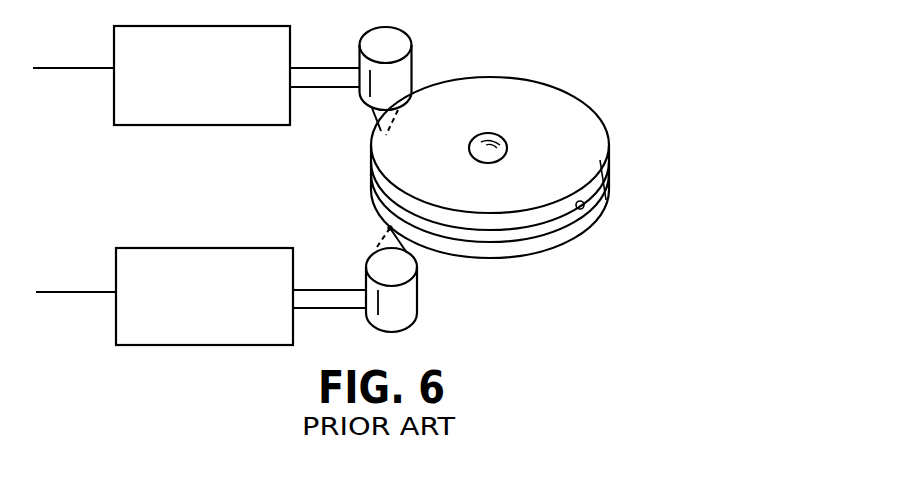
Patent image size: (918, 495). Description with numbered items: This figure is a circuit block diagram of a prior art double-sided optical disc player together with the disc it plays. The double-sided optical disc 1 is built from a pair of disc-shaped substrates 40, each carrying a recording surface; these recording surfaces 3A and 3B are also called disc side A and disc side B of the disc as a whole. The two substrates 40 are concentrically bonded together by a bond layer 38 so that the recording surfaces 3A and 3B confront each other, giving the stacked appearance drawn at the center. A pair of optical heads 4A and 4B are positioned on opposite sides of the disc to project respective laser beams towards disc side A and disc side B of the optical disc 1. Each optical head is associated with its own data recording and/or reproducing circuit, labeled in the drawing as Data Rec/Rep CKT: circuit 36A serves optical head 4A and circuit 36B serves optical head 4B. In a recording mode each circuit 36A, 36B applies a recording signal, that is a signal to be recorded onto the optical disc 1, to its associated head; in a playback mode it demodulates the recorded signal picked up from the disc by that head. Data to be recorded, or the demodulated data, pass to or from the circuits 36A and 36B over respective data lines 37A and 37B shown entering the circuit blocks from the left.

The double-sided optical disc 1 is at (592, 128).
The recording surface 3A is at (597, 208).
The recording surface 3B is at (532, 240).
The optical head 4A is at (413, 60).
The optical head 4B is at (420, 298).
The data recording and/or reproducing circuit 36A is at (215, 125).
The data recording and/or reproducing circuit 36B is at (198, 248).
The data line 37A is at (68, 69).
The data line 37B is at (60, 292).
The bond layer 38 is at (565, 220).
The disc-shaped substrate 40 is at (603, 185).